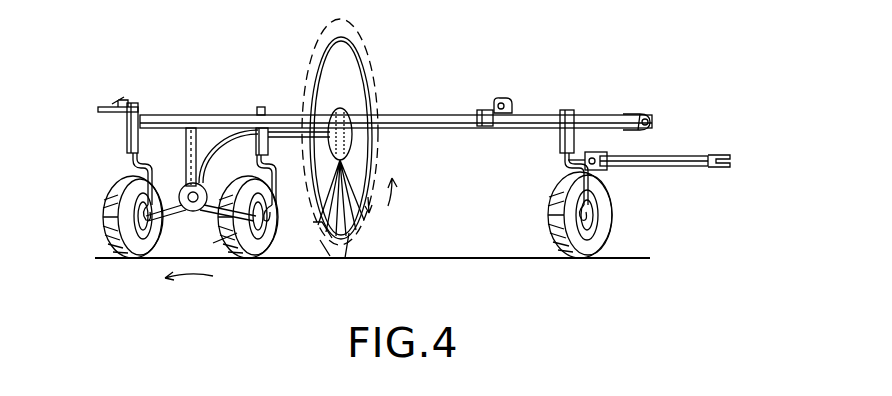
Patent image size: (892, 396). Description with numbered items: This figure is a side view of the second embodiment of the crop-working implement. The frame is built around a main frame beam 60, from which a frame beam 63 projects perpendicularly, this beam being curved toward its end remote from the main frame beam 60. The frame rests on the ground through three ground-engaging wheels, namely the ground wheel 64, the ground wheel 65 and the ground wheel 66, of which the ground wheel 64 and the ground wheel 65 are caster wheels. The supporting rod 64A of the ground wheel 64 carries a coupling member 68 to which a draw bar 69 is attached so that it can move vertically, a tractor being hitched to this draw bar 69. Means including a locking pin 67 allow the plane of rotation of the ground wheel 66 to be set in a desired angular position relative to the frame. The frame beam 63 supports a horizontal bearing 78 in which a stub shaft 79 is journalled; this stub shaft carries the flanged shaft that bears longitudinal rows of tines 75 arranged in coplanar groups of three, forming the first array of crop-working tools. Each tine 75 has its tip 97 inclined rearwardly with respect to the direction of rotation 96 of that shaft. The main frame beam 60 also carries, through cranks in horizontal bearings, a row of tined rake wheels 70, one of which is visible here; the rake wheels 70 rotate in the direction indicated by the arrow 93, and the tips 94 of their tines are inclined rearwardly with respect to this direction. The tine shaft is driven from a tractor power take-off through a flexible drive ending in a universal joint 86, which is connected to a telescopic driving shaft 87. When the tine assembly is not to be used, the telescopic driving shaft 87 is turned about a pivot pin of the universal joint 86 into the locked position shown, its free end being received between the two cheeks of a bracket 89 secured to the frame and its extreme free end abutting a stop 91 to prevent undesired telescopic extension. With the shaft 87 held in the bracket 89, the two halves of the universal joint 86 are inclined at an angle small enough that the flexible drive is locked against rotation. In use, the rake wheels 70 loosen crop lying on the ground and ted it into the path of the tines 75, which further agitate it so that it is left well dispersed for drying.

The main frame beam 60 is at (426, 118).
The frame beam 63 is at (190, 120).
The ground wheel 64 is at (600, 236).
The supporting rod 64A is at (565, 168).
The ground wheel 65 is at (272, 244).
The ground wheel 66 is at (152, 243).
The locking pin 67 is at (127, 102).
The coupling member 68 is at (580, 156).
The draw bar 69 is at (690, 168).
The tined rake wheel 70 is at (355, 46).
The tine 75 is at (222, 207).
The horizontal bearing 78 is at (202, 192).
The stub shaft 79 is at (186, 186).
The universal joint 86 is at (630, 128).
The telescopic driving shaft 87 is at (565, 112).
The bracket 89 is at (512, 99).
The stop 91 is at (480, 110).
The direction of rotation of the rake wheels 93 is at (389, 199).
The tine tips of rake wheels 94 is at (341, 260).
The direction of rotation of the shaft 96 is at (192, 288).
The tine tip 97 is at (217, 247).